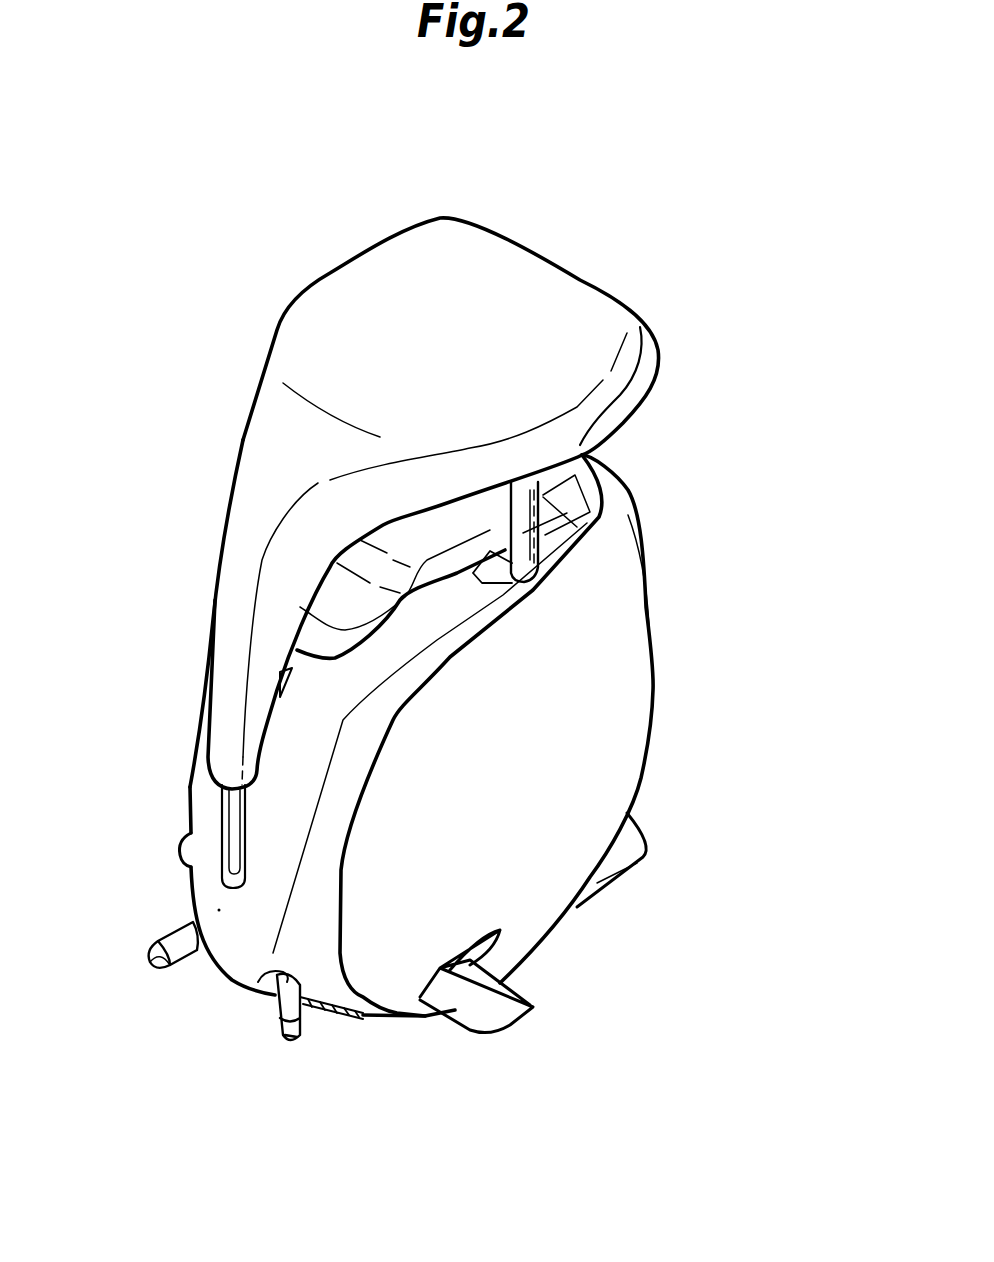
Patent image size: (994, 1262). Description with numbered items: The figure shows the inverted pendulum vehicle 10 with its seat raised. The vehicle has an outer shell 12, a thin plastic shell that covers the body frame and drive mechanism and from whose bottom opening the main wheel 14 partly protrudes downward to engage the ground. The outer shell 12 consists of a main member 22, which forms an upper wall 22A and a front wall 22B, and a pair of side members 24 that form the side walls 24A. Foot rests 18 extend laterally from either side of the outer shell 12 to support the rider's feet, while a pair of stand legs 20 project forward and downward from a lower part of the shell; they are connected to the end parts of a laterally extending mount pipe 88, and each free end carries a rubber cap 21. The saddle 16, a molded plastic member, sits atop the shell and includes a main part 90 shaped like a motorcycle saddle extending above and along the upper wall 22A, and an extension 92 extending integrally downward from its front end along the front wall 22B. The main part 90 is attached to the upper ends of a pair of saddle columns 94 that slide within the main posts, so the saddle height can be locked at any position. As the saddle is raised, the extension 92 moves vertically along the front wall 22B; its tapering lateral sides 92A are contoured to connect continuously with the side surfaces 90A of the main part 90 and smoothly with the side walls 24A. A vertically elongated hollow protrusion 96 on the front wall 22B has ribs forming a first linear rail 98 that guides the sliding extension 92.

The inverted pendulum vehicle 10 is at (697, 576).
The outer shell 12 is at (630, 697).
The main wheel 14 is at (346, 1030).
The saddle 16 is at (515, 268).
The foot rests 18 is at (181, 837).
The stand legs 20 is at (163, 940).
The rubber cap 21 is at (153, 960).
The main member 22 is at (343, 773).
The upper wall 22A is at (460, 600).
The front wall 22B is at (293, 813).
The side members 24 is at (540, 910).
The side walls 24A is at (573, 757).
The mount pipe 88 is at (277, 973).
The main part 90 is at (370, 262).
The side surfaces 90A is at (437, 477).
The extension 92 is at (237, 552).
The lateral sides 92A is at (270, 623).
The saddle columns 94 is at (523, 537).
The hollow protrusion 96 is at (283, 690).
The first linear rail 98 is at (218, 808).